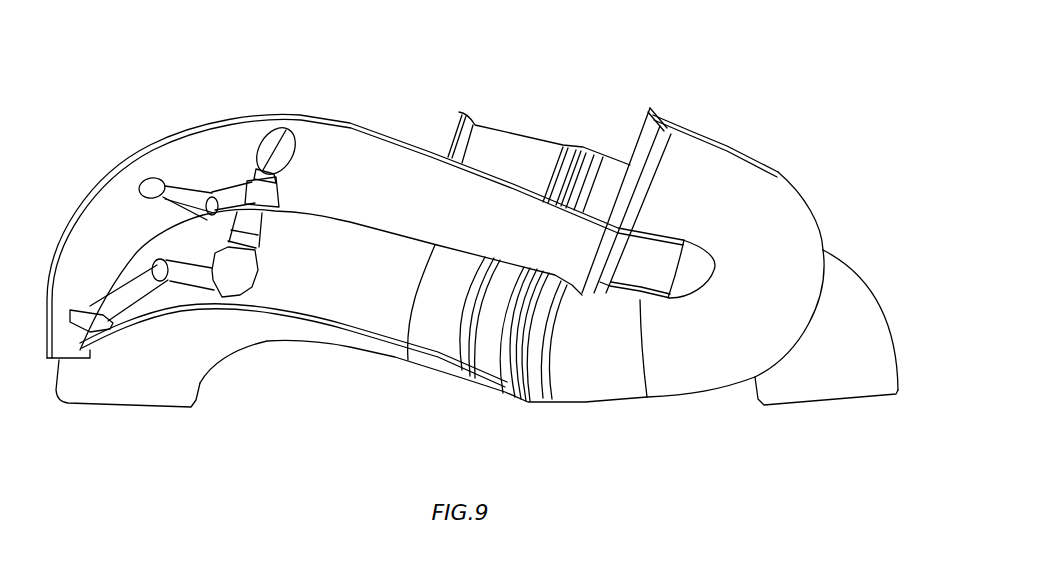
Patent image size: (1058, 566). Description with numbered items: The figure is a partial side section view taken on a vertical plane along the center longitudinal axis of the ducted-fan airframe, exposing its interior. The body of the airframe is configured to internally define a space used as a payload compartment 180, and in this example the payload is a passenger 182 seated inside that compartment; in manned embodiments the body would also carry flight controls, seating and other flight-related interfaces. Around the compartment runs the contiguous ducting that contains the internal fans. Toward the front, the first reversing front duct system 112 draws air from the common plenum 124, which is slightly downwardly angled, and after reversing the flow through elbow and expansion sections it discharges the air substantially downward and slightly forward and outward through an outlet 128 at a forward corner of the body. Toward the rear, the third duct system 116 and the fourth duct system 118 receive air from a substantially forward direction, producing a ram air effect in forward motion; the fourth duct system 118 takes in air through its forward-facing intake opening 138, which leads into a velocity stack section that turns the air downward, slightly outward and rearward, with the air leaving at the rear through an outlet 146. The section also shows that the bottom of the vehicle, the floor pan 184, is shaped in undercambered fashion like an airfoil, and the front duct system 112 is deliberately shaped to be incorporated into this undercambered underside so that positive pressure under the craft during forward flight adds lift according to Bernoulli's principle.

The first reversing front duct system 112 is at (360, 356).
The third duct system 116 is at (853, 266).
The fourth duct system 118 is at (620, 152).
The common plenum 124 is at (648, 101).
The outlet 128 is at (125, 416).
The intake opening 138 is at (457, 105).
The outlet 146 is at (839, 411).
The payload compartment 180 is at (214, 163).
The passenger 182 is at (263, 296).
The floor pan 184 is at (228, 325).